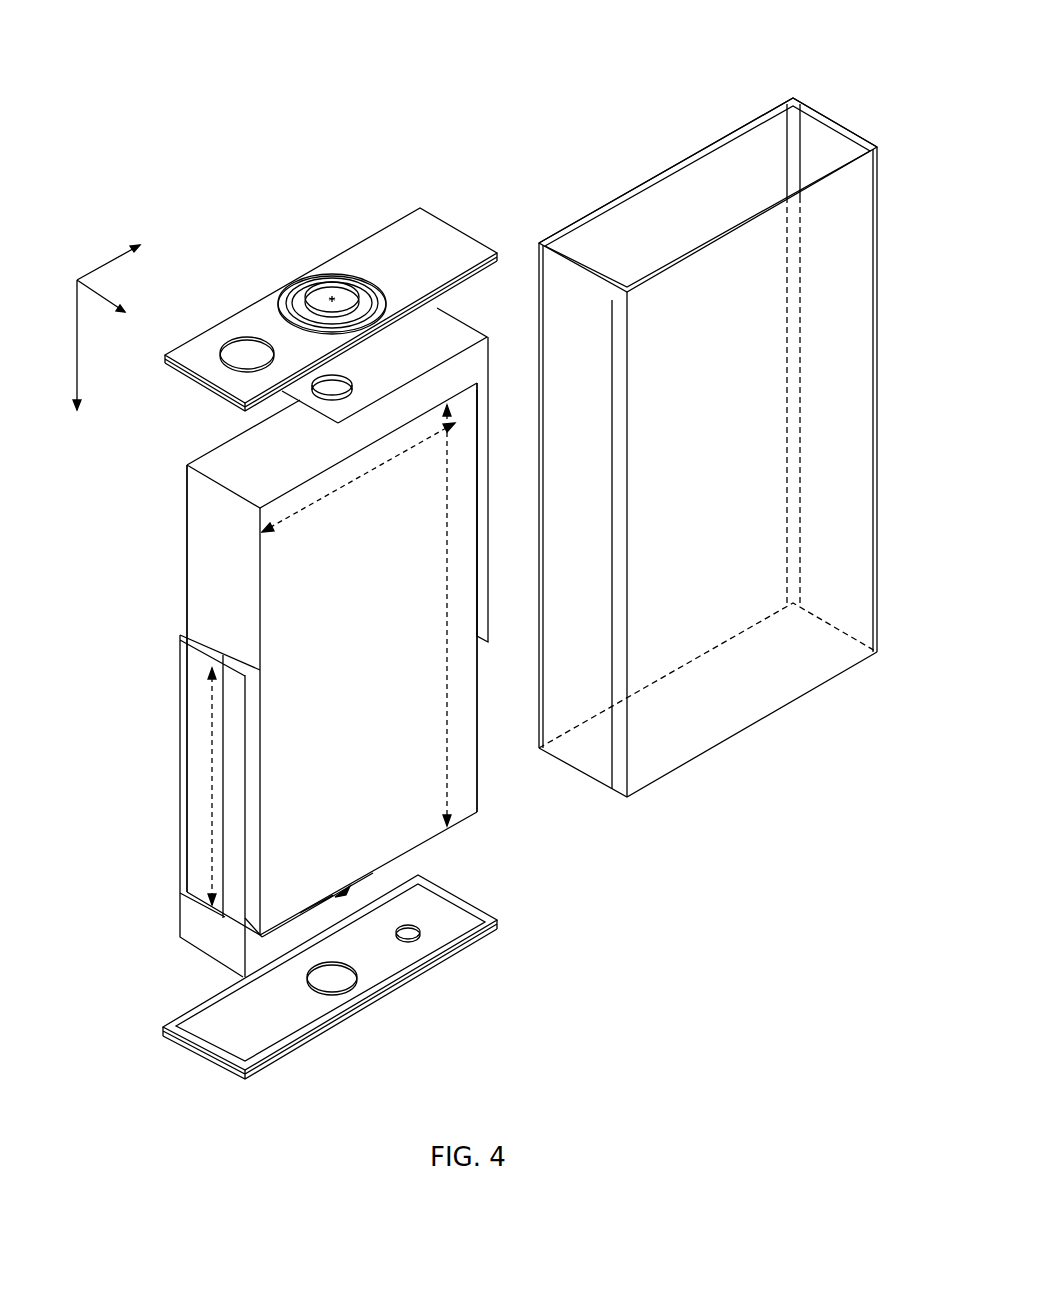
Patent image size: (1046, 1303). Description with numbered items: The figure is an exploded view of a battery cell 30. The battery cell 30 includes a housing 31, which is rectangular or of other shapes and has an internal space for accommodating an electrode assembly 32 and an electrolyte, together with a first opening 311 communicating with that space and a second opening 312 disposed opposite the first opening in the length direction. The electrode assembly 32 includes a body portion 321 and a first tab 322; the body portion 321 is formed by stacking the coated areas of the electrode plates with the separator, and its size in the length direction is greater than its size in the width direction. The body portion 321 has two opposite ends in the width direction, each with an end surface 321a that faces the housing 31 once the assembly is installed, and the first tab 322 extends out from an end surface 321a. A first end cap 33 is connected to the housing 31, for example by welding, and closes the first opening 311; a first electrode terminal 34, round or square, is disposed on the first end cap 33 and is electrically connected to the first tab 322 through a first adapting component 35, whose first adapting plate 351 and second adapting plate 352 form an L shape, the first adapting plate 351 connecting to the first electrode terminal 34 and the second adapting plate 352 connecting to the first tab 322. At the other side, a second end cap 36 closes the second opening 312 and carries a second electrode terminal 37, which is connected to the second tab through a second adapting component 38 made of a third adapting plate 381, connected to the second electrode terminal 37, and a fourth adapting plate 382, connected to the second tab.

The battery cell 30 is at (110, 97).
The housing 31 is at (590, 650).
The first opening 311 is at (745, 658).
The second opening 312 is at (697, 197).
The electrode assembly 32 is at (78, 698).
The body portion 321 is at (330, 613).
The end surface 321a is at (210, 556).
The first tab 322 is at (200, 790).
The first end cap 33 is at (257, 1022).
The first electrode terminal 34 is at (335, 983).
The first adapting component 35 is at (78, 883).
The first adapting plate 351 is at (280, 947).
The second adapting plate 352 is at (205, 916).
The second end cap 36 is at (390, 250).
The second electrode terminal 37 is at (330, 300).
The second adapting component 38 is at (520, 117).
The third adapting plate 381 is at (415, 350).
The fourth adapting plate 382 is at (490, 360).